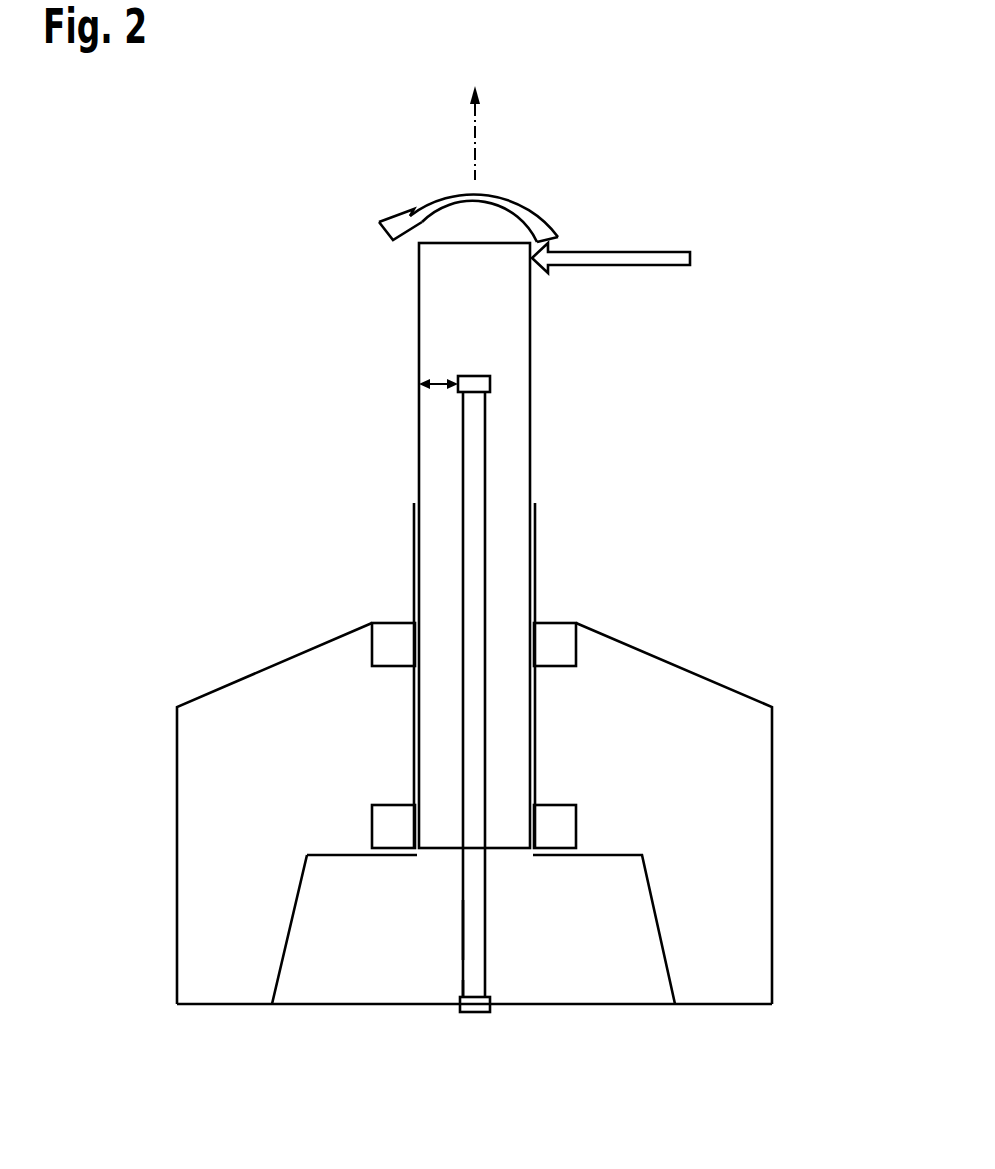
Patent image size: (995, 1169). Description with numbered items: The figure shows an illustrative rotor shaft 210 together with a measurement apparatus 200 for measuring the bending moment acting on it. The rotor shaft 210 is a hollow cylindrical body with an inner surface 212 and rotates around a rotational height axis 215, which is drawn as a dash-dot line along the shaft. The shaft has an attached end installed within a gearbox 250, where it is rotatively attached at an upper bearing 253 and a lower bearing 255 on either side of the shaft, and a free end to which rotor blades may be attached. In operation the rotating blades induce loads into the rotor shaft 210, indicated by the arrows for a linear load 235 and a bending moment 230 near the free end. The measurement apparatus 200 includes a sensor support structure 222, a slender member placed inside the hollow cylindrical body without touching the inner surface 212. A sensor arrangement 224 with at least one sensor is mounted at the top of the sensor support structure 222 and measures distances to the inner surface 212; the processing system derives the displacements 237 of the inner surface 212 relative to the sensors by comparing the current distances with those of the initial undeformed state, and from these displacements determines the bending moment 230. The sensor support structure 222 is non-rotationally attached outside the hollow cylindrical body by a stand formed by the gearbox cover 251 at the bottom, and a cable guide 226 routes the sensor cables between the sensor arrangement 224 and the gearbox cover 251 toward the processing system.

The measurement apparatus 200 is at (502, 907).
The rotor shaft 210 is at (530, 367).
The inner surface 212 is at (513, 340).
The rotational height axis 215 is at (470, 142).
The sensor support structure 222 is at (473, 930).
The sensor arrangement 224 is at (475, 375).
The cable guide 226 is at (472, 982).
The bending moment 230 is at (533, 203).
The linear load 235 is at (634, 252).
The displacement 237 is at (442, 383).
The gearbox 250 is at (710, 682).
The gearbox cover 251 is at (482, 1013).
The upper bearing 253 is at (397, 635).
The lower bearing 255 is at (392, 826).